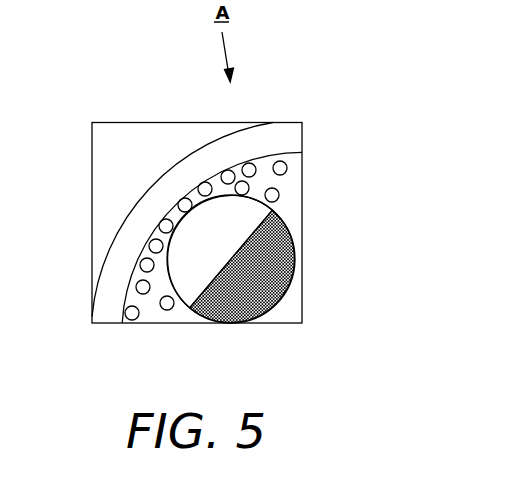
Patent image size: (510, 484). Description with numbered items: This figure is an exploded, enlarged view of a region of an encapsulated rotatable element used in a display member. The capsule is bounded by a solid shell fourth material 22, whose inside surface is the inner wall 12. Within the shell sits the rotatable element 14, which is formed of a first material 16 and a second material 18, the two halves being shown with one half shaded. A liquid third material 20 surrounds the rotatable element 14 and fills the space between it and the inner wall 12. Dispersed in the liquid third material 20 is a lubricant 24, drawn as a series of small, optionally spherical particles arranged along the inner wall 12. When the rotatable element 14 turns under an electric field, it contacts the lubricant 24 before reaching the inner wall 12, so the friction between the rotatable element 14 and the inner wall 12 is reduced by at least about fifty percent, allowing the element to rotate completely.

The inner wall 12 is at (204, 189).
The rotatable element 14 is at (292, 233).
The first material 16 is at (233, 322).
The second material 18 is at (186, 300).
The liquid third material 20 is at (293, 312).
The solid shell fourth material 22 is at (115, 250).
The lubricant 24 is at (284, 169).